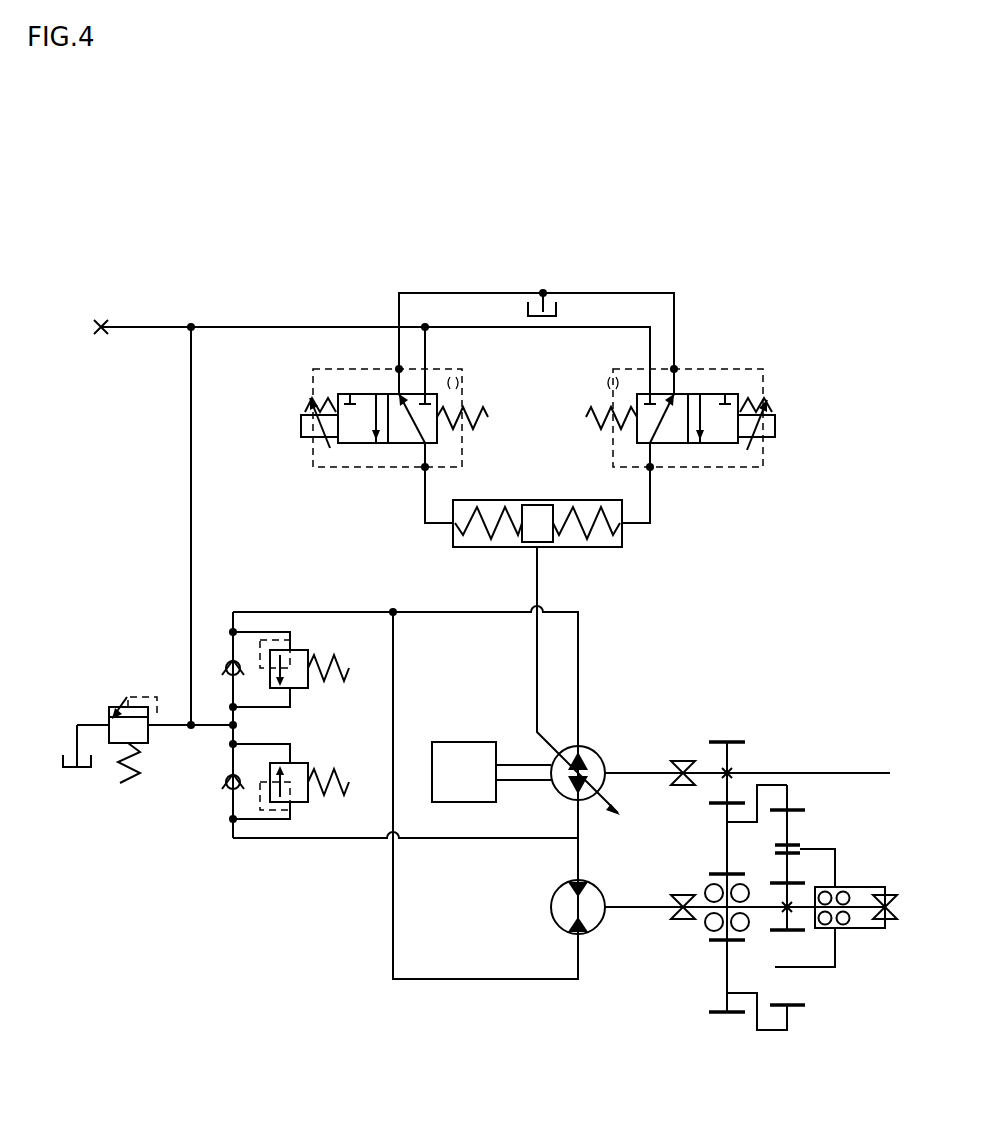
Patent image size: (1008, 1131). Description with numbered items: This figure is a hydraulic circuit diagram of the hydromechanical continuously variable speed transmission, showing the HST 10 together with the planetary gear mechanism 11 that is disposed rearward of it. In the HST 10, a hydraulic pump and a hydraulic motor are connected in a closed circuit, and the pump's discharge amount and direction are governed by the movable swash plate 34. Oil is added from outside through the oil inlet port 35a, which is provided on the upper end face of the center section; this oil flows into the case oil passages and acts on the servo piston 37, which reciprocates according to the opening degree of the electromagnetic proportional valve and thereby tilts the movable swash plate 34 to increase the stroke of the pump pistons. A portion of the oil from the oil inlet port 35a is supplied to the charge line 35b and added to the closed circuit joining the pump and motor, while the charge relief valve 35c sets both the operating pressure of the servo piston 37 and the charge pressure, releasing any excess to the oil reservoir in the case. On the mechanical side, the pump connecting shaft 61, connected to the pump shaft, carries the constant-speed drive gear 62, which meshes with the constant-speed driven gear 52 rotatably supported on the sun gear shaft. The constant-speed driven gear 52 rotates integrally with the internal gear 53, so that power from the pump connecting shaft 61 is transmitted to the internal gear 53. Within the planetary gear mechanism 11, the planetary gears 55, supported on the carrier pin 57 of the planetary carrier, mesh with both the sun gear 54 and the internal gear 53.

The HST 10 is at (380, 928).
The planetary gear mechanism 11 is at (765, 872).
The movable swash plate 34 is at (604, 767).
The oil inlet port 35a is at (102, 322).
The charge line 35b is at (152, 728).
The charge relief valve 35c is at (128, 697).
The servo piston 37 is at (536, 528).
The constant-speed driven gear 52 is at (727, 1012).
The internal gear 53 is at (797, 1010).
The sun gear 54 is at (776, 932).
The planetary gears 55 is at (792, 812).
The carrier pin 57 is at (812, 848).
The pump connecting shaft 61 is at (651, 780).
The constant-speed drive gear 62 is at (720, 742).